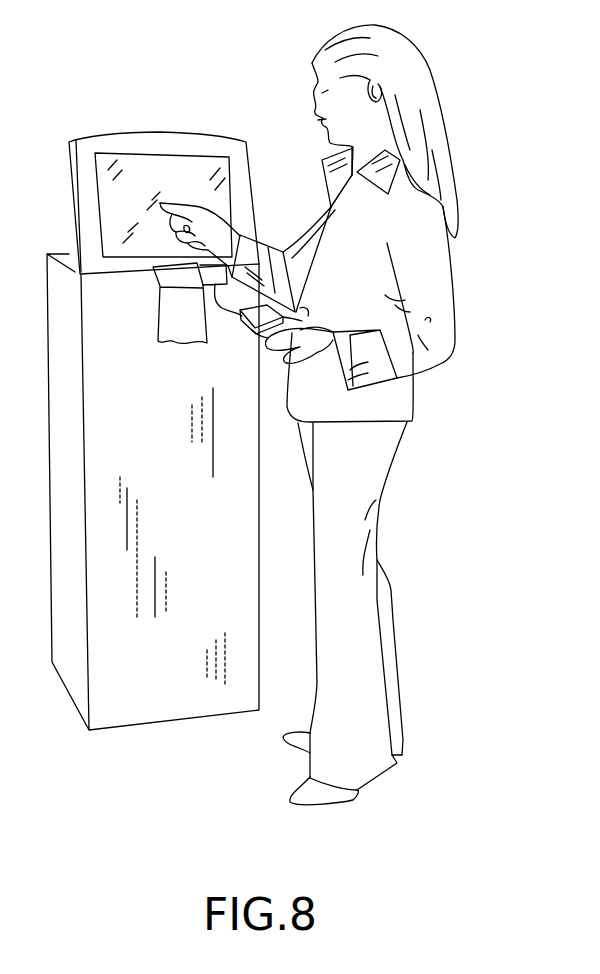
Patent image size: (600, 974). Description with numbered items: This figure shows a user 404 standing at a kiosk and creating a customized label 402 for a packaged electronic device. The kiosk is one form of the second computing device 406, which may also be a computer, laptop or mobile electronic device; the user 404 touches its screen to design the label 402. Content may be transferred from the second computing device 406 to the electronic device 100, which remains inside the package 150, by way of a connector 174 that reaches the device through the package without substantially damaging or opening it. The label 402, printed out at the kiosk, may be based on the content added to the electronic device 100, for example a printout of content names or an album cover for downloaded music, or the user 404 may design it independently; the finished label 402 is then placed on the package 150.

The second computing device 406 is at (94, 147).
The connector 174 is at (158, 293).
The label 402 is at (158, 318).
The package 150 is at (241, 322).
The electronic device 100 is at (247, 336).
The user 404 is at (433, 260).